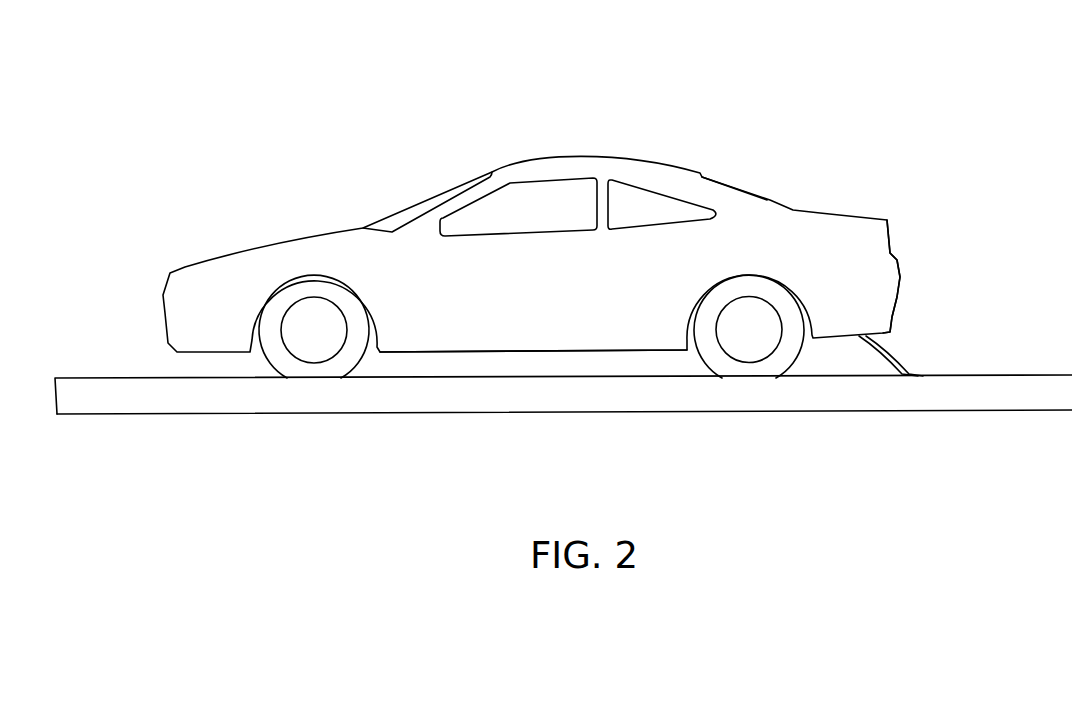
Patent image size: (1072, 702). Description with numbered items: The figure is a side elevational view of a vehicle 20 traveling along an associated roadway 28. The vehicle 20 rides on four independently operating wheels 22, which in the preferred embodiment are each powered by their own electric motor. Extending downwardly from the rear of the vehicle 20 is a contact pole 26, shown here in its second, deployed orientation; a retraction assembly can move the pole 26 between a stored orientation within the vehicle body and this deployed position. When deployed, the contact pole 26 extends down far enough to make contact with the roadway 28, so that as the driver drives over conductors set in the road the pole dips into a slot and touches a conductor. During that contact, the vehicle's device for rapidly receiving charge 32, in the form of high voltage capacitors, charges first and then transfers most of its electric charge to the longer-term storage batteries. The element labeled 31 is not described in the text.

The vehicle 20 is at (582, 157).
The wheels 22 is at (348, 415).
The contact pole 26 is at (897, 360).
The roadway 28 is at (688, 413).
The rear end of vehicle 31 is at (893, 250).
The device for rapidly receiving charge 32 is at (500, 350).